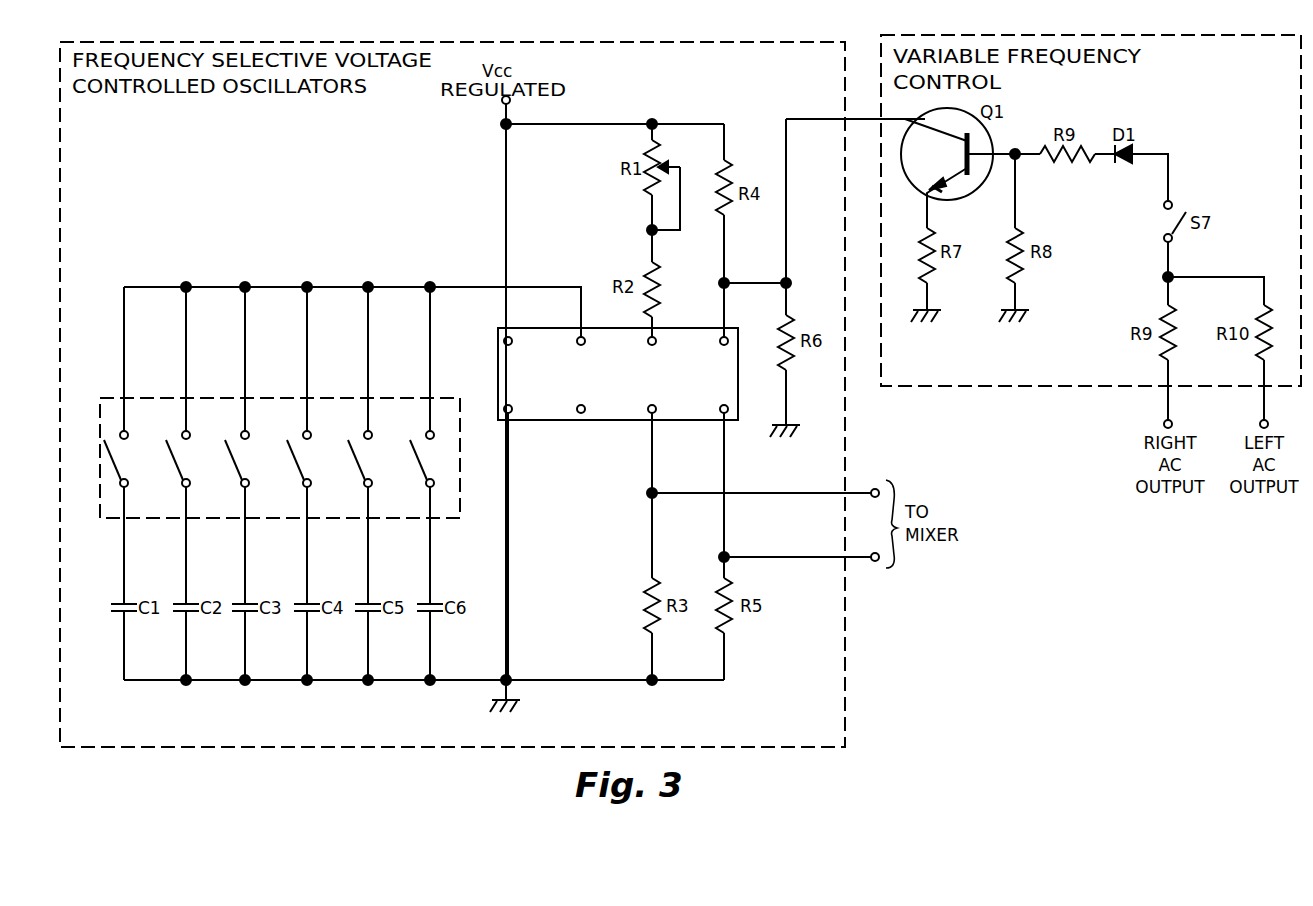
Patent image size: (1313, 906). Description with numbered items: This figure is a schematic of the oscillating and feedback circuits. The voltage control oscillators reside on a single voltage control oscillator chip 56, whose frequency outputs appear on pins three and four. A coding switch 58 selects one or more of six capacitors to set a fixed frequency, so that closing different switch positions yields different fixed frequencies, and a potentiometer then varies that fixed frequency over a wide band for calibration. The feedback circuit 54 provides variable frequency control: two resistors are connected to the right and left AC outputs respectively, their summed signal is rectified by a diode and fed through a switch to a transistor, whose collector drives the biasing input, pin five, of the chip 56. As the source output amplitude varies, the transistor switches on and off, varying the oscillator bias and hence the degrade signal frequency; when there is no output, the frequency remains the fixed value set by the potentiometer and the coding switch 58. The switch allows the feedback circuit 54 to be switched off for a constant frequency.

The feedback circuit 54 is at (985, 386).
The voltage control oscillator chip 56 is at (498, 352).
The coding switch 58 is at (116, 398).